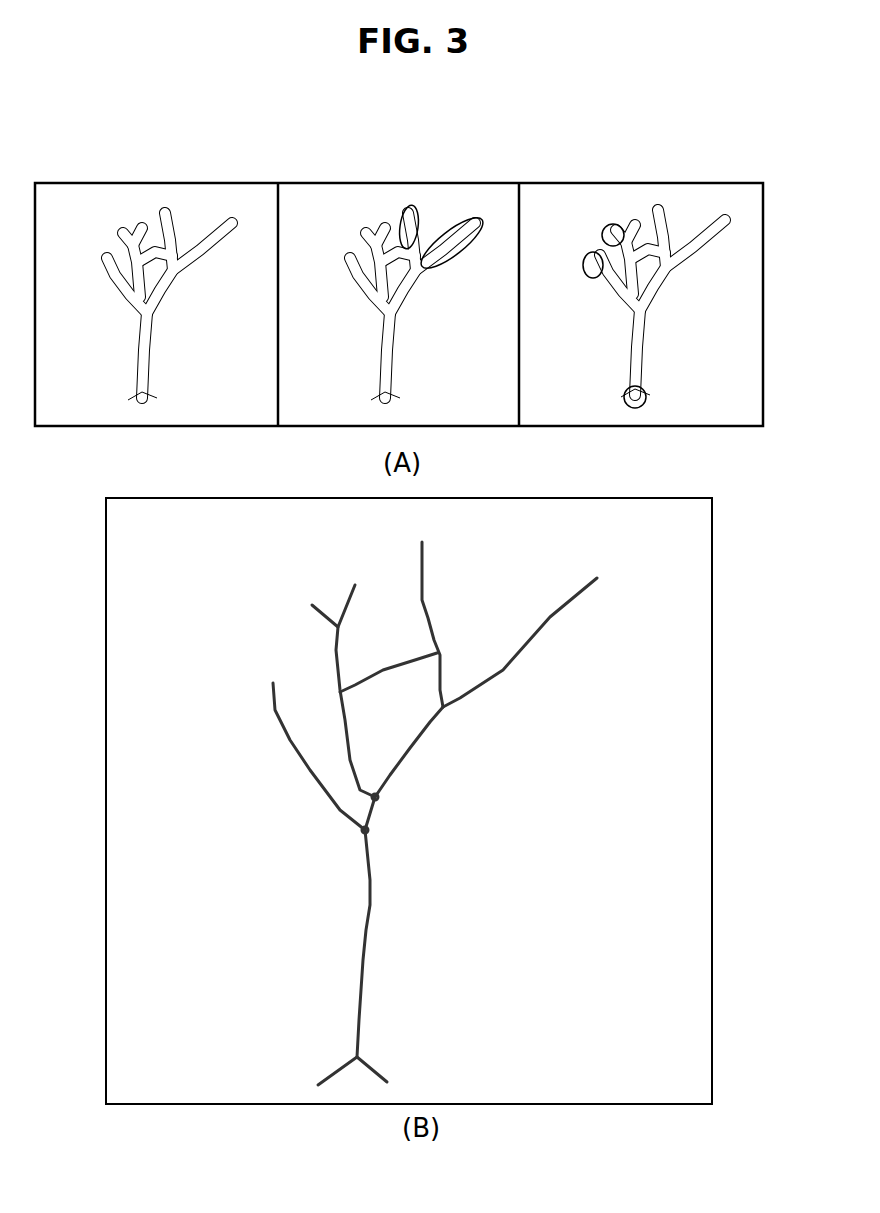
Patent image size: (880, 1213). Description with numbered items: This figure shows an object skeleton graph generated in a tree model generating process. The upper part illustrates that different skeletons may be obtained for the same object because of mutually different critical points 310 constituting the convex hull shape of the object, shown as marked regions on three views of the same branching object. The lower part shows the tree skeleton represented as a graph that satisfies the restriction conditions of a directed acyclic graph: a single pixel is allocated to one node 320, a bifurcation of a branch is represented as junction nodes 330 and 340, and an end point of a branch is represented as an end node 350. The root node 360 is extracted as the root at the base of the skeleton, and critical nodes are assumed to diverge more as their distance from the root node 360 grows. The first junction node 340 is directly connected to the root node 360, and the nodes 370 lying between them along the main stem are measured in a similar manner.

The critical points 310 is at (610, 227).
The node 320 is at (555, 623).
The junction node 330 is at (376, 797).
The first junction node 340 is at (370, 832).
The end node 350 is at (422, 542).
The root node 360 is at (360, 1053).
The nodes between the first junction node and the root node 370 is at (355, 838).